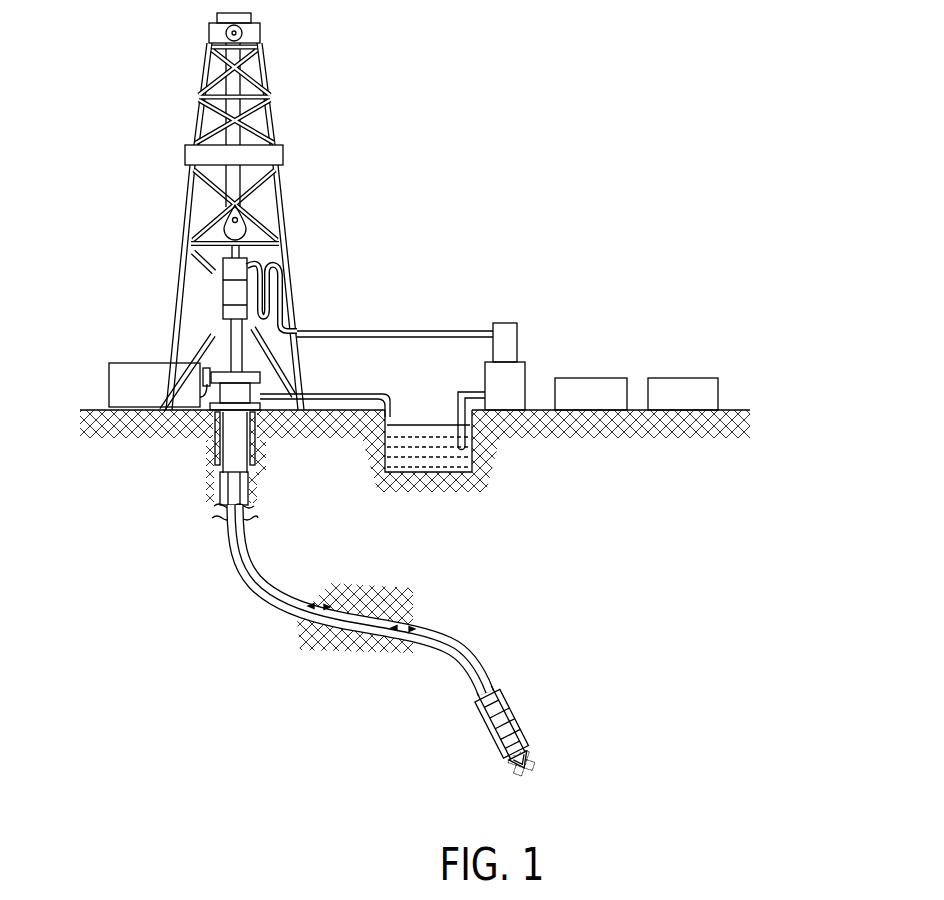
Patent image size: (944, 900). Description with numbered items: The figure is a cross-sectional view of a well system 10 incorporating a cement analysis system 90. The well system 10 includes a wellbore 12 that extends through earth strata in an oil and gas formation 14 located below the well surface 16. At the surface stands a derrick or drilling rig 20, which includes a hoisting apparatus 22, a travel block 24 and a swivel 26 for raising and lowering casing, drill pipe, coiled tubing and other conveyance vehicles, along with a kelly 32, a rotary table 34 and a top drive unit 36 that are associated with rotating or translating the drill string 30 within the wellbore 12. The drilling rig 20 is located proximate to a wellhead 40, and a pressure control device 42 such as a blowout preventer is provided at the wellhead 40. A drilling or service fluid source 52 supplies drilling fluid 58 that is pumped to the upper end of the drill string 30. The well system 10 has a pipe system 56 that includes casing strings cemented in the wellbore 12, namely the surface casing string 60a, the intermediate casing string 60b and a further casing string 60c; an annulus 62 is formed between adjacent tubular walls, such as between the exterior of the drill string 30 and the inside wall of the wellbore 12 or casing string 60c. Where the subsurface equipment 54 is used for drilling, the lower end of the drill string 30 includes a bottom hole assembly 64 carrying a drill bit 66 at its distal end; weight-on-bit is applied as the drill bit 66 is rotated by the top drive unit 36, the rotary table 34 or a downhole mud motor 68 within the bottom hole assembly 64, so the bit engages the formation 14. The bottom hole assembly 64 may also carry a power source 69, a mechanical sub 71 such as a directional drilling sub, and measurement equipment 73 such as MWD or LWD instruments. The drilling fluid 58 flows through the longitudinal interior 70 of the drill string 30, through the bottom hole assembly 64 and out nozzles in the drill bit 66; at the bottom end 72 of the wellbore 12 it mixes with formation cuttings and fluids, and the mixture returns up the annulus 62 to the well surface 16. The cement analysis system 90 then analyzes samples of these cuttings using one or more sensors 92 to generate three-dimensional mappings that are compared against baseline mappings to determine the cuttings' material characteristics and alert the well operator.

The well system 10 is at (318, 103).
The wellbore 12 is at (278, 618).
The formation 14 is at (495, 514).
The well surface 16 is at (93, 407).
The drilling rig 20 is at (207, 28).
The hoisting apparatus 22 is at (250, 37).
The travel block 24 is at (247, 222).
The swivel 26 is at (262, 270).
The drill string 30 is at (280, 562).
The kelly 32 is at (228, 352).
The rotary table 34 is at (297, 333).
The top drive unit 36 is at (226, 298).
The wellhead 40 is at (270, 386).
The pressure control device 42 is at (200, 398).
The fluid source 52 is at (453, 467).
The subsurface equipment 54 is at (523, 709).
The pipe system 56 is at (232, 591).
The drilling fluid 58 is at (420, 462).
The surface casing string 60a is at (220, 438).
The intermediate casing string 60b is at (220, 453).
The casing string 60c is at (248, 488).
The annulus 62 is at (303, 590).
The bottom hole assembly 64 is at (488, 729).
The drill bit 66 is at (520, 771).
The downhole mud motor 68 is at (507, 717).
The power source 69 is at (515, 726).
The longitudinal interior 70 is at (477, 660).
The mechanical sub 71 is at (522, 737).
The bottom end 72 is at (542, 773).
The measurement equipment 73 is at (530, 748).
The cement analysis system 90 is at (590, 378).
The sensor 92 is at (685, 378).